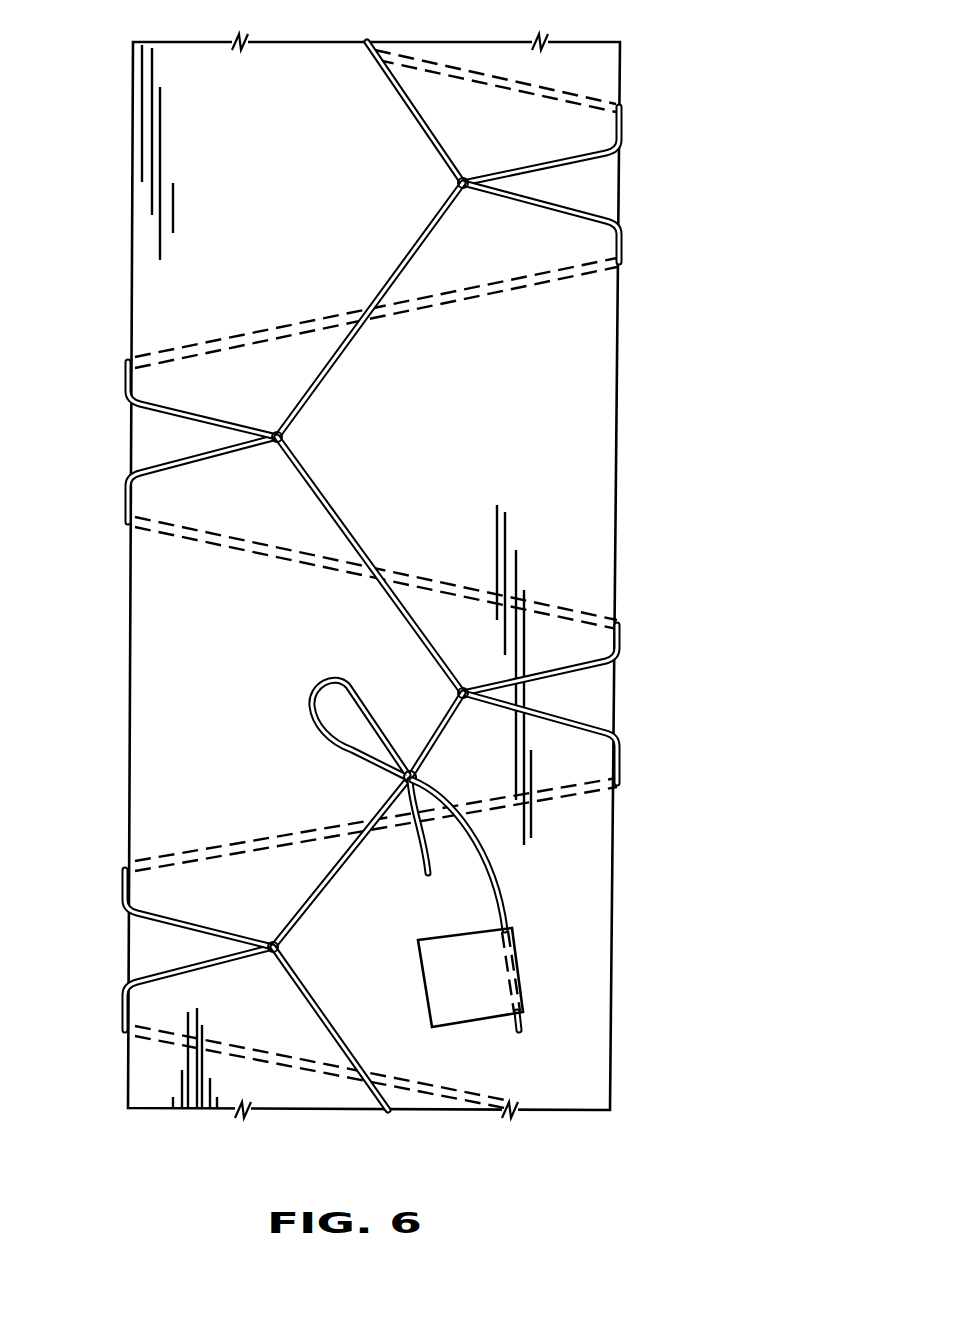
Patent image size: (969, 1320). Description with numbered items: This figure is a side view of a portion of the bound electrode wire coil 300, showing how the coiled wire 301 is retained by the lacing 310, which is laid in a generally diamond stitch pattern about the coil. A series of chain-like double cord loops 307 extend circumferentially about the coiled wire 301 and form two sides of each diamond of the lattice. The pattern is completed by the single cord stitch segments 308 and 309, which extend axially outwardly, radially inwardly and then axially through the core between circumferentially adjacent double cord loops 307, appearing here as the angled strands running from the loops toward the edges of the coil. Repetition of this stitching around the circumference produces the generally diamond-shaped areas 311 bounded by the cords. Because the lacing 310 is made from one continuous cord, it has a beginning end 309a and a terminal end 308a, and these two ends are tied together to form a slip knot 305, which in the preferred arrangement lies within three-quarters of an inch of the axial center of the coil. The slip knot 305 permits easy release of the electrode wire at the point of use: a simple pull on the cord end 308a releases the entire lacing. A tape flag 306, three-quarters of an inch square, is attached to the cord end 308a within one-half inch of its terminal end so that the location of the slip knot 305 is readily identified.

The electrode wire coil 300 is at (775, 153).
The coiled wire 301 is at (592, 481).
The slip knot 305 is at (423, 773).
The tape flag 306 is at (480, 980).
The double cord loops 307 is at (397, 104).
The single cord stitch segment 308 is at (587, 155).
The terminal end of lacing cord 308a is at (490, 870).
The single cord stitch segment 309 is at (590, 210).
The beginning end of lacing cord 309a is at (417, 857).
The lacing 310 is at (355, 598).
The diamond-shaped areas 311 is at (212, 240).